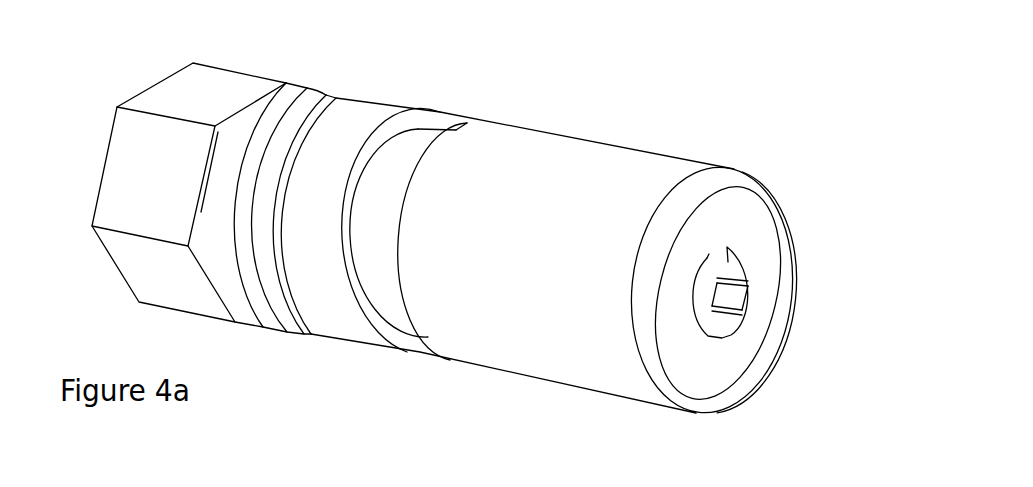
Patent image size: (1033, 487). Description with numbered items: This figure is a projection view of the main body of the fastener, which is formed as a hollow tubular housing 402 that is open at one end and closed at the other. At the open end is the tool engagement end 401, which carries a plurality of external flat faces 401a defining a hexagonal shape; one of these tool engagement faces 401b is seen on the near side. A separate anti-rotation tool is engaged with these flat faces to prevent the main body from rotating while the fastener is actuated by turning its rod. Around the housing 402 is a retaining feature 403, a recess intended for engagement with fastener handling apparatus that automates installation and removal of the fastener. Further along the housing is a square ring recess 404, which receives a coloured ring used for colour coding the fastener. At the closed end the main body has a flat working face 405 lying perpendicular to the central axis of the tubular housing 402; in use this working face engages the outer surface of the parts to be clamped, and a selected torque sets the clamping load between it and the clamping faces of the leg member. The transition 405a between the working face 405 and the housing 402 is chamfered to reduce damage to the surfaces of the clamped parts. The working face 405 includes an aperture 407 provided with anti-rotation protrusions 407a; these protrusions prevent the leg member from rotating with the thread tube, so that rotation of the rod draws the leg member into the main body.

The tool engagement end 401 is at (147, 170).
The external flat faces 401a is at (178, 96).
The tool engagement face 401b is at (163, 166).
The hollow tubular housing 402 is at (640, 169).
The retaining feature 403 is at (303, 130).
The square ring recess 404 is at (409, 148).
The working face 405 is at (765, 332).
The transition 405a is at (743, 184).
The aperture 407 is at (698, 311).
The anti-rotation protrusions 407a is at (733, 283).